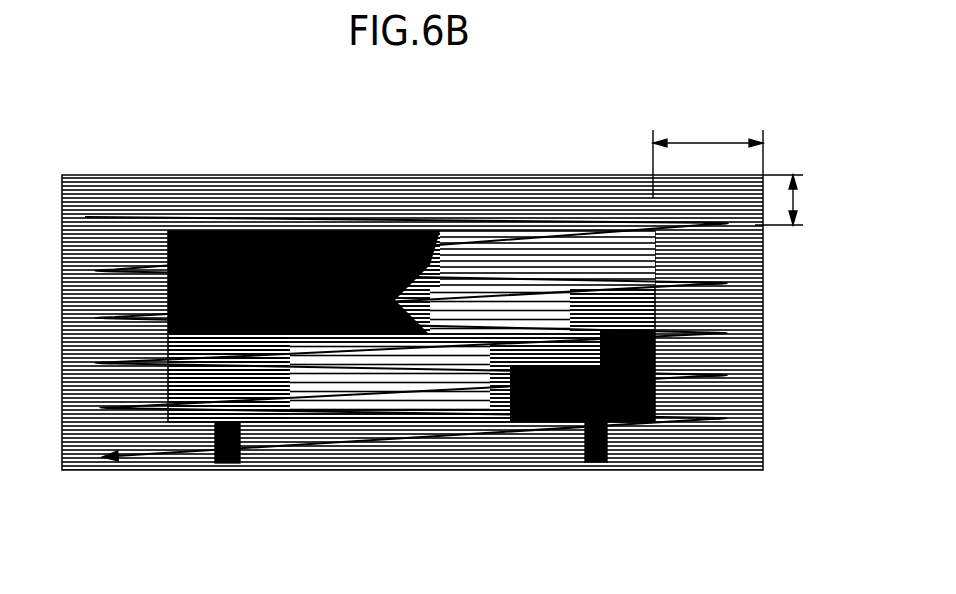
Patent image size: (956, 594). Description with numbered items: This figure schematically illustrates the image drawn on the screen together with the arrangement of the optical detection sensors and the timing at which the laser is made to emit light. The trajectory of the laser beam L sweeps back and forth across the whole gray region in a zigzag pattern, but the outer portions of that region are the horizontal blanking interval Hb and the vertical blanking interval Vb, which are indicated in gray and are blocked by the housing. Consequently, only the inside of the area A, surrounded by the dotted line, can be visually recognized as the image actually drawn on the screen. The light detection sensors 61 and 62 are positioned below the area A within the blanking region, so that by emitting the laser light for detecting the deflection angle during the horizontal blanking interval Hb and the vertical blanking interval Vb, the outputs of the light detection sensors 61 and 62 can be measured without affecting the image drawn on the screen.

The laser beam L is at (128, 217).
The area A is at (413, 232).
The light detection sensor 61 is at (597, 462).
The light detection sensor 62 is at (228, 463).
The horizontal blanking interval Hb is at (708, 156).
The vertical blanking interval Vb is at (790, 200).